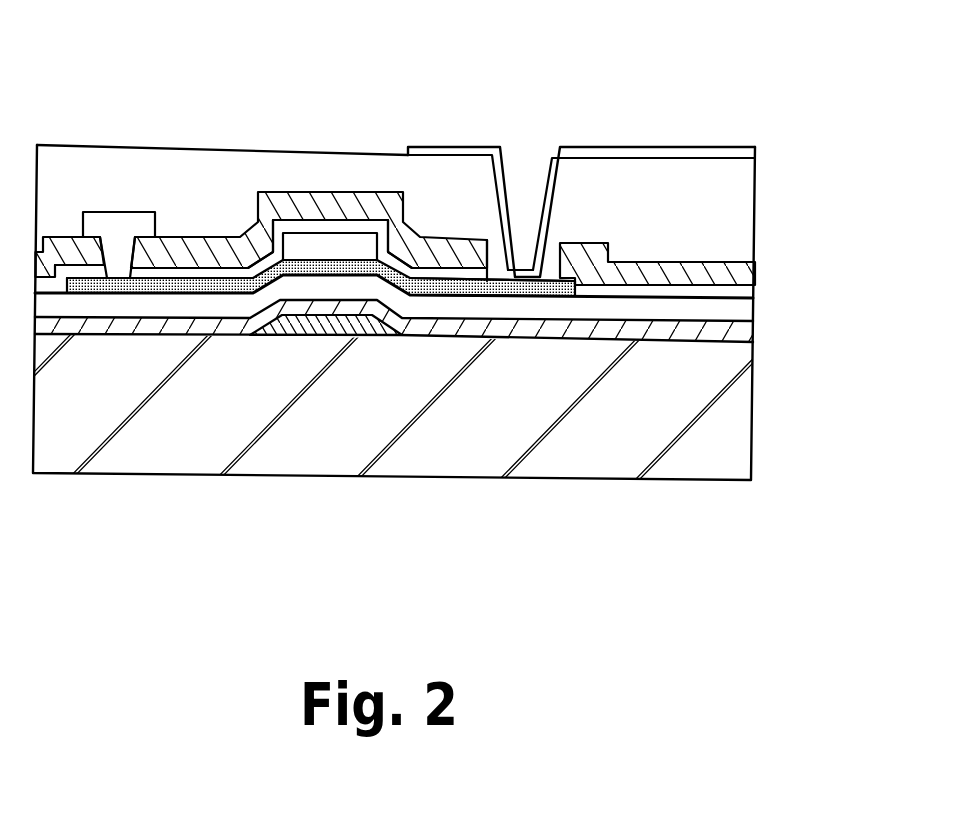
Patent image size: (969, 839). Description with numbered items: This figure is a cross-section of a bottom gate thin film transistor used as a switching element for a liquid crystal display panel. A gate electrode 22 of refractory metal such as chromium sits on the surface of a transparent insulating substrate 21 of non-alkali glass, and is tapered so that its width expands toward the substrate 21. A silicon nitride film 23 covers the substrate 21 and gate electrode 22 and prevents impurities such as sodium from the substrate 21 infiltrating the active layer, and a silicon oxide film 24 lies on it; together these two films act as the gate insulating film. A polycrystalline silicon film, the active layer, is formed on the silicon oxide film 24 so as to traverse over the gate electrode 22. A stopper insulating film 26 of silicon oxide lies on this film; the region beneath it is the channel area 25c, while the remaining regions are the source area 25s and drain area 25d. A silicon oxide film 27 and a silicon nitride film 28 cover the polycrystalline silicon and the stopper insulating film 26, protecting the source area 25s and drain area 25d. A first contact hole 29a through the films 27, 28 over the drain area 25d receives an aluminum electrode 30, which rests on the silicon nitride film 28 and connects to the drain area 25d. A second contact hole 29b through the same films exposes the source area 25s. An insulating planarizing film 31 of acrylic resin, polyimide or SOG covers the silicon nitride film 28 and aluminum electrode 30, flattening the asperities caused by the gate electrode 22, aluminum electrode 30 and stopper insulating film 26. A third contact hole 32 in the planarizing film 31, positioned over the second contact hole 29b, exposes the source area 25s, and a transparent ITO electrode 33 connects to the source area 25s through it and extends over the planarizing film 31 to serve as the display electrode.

The transparent insulating substrate 21 is at (740, 458).
The gate electrode 22 is at (285, 330).
The silicon nitride film 23 is at (745, 338).
The silicon oxide film 24 is at (745, 313).
The channel area 25c is at (347, 262).
The drain area 25d is at (215, 287).
The source area 25s is at (450, 295).
The stopper insulating film 26 is at (302, 243).
The silicon oxide film 27 is at (742, 293).
The silicon nitride film 28 is at (742, 272).
The first contact hole 29a is at (110, 265).
The second contact hole 29b is at (450, 240).
The aluminum electrode 30 is at (147, 232).
The insulating planarizing film 31 is at (738, 208).
The third contact hole 32 is at (557, 197).
The transparent electrode 33 is at (727, 147).